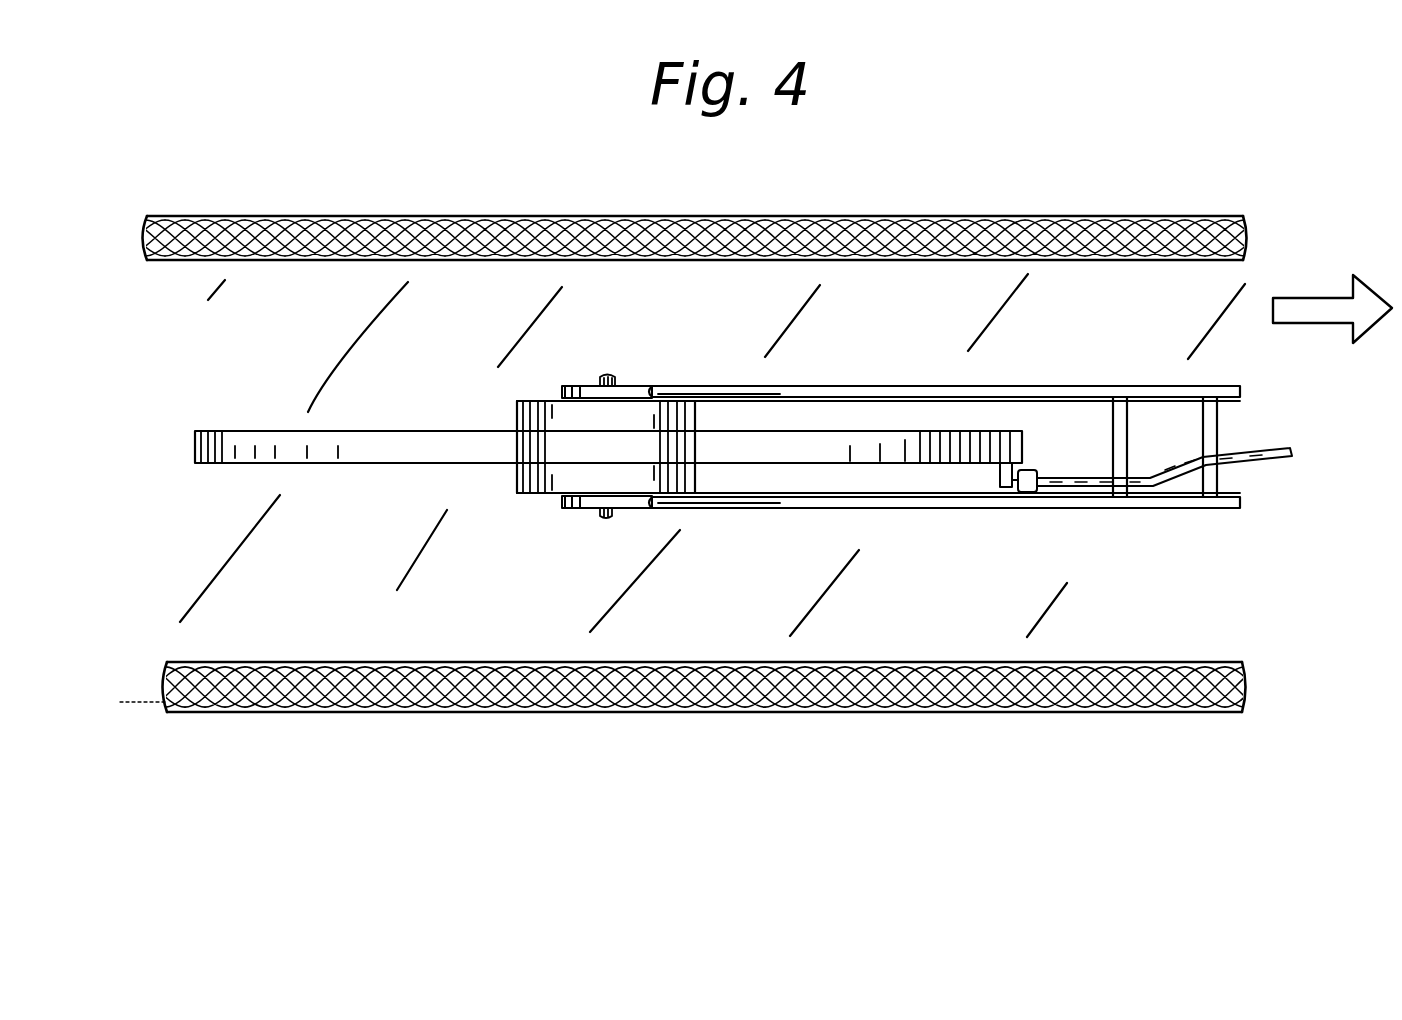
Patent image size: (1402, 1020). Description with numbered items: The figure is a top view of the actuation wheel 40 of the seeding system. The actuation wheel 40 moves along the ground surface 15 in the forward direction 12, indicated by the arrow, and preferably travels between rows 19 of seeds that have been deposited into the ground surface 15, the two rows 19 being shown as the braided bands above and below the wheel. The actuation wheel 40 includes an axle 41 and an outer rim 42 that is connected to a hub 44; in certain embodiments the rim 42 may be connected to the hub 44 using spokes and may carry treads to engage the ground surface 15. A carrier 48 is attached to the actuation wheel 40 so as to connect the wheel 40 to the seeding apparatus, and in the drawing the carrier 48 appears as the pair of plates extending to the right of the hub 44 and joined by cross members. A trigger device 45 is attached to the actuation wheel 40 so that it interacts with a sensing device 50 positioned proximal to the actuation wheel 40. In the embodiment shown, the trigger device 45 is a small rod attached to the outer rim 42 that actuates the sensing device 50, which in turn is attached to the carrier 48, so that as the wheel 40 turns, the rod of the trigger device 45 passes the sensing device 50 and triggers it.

The forward direction 12 is at (1320, 298).
The ground surface 15 is at (392, 560).
The rows of seeds 19 is at (290, 226).
The actuation wheel 40 is at (305, 358).
The axle 41 is at (607, 375).
The outer rim 42 is at (195, 442).
The hub 44 is at (517, 405).
The trigger device 45 is at (1000, 478).
The carrier 48 is at (1065, 387).
The sensing device 50 is at (1030, 508).